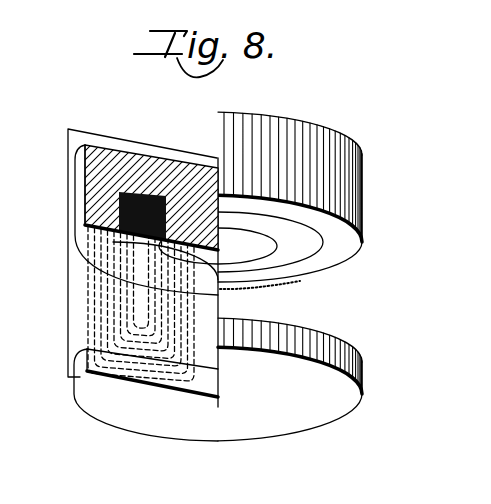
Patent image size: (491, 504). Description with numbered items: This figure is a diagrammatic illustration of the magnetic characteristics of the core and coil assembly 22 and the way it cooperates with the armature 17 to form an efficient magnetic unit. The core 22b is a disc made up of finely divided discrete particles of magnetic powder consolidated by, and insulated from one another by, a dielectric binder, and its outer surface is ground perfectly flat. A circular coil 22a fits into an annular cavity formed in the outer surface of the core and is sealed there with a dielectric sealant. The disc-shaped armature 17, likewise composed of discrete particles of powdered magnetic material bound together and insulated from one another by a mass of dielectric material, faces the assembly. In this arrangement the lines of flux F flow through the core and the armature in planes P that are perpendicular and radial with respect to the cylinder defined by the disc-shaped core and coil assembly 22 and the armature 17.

The planes P is at (89, 129).
The lines of flux F is at (90, 322).
The core and coil assembly 22 is at (377, 95).
The circular coil 22a is at (292, 261).
The core 22b is at (344, 262).
The armature 17 is at (327, 418).